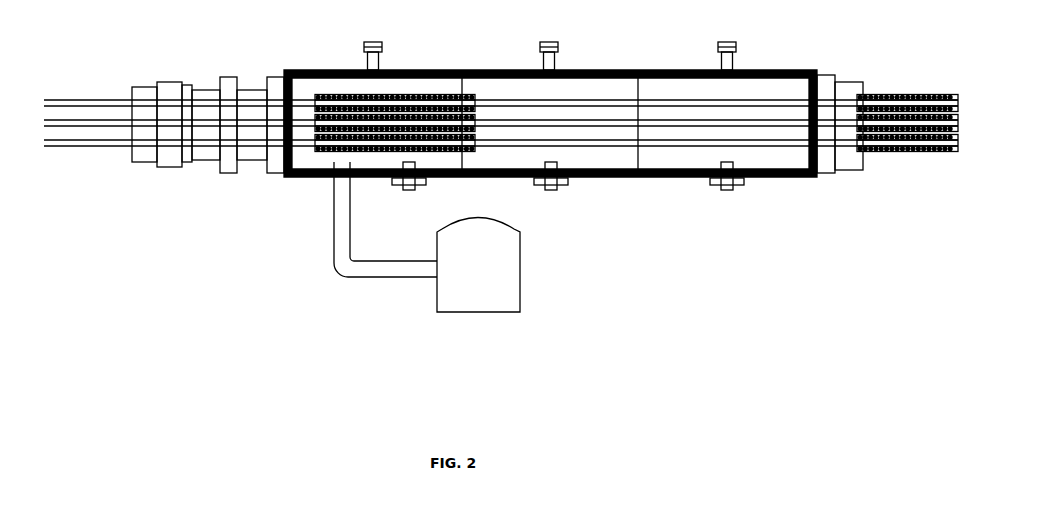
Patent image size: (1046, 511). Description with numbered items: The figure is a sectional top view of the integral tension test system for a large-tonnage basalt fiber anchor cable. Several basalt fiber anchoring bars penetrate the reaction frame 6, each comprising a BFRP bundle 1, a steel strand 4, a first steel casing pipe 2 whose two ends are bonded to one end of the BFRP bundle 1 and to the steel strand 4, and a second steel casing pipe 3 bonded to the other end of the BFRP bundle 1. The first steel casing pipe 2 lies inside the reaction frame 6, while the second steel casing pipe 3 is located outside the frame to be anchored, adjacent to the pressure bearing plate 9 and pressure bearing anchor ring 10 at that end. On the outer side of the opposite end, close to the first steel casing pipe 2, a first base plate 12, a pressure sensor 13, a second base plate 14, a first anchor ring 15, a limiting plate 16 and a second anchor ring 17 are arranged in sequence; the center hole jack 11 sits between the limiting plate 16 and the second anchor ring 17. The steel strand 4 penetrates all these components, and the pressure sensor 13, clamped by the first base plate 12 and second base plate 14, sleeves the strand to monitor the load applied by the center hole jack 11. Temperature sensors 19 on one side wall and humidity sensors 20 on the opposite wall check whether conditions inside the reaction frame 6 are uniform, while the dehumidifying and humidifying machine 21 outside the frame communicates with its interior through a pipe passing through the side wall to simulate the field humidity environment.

The BFRP bundle 1 is at (660, 98).
The first steel casing pipe 2 is at (420, 95).
The second steel casing pipe 3 is at (905, 95).
The steel strand 4 is at (67, 100).
The reaction frame 6 is at (592, 72).
The pressure bearing plate 9 is at (828, 82).
The pressure bearing anchor ring 10 is at (852, 92).
The center hole jack 11 is at (172, 157).
The first base plate 12 is at (275, 87).
The pressure sensor 13 is at (250, 153).
The second base plate 14 is at (230, 87).
The first anchor ring 15 is at (203, 153).
The limiting plate 16 is at (187, 92).
The second anchor ring 17 is at (143, 92).
The temperature sensor 19 is at (730, 43).
The humidity sensor 20 is at (728, 192).
The dehumidifying and humidifying machine 21 is at (512, 288).